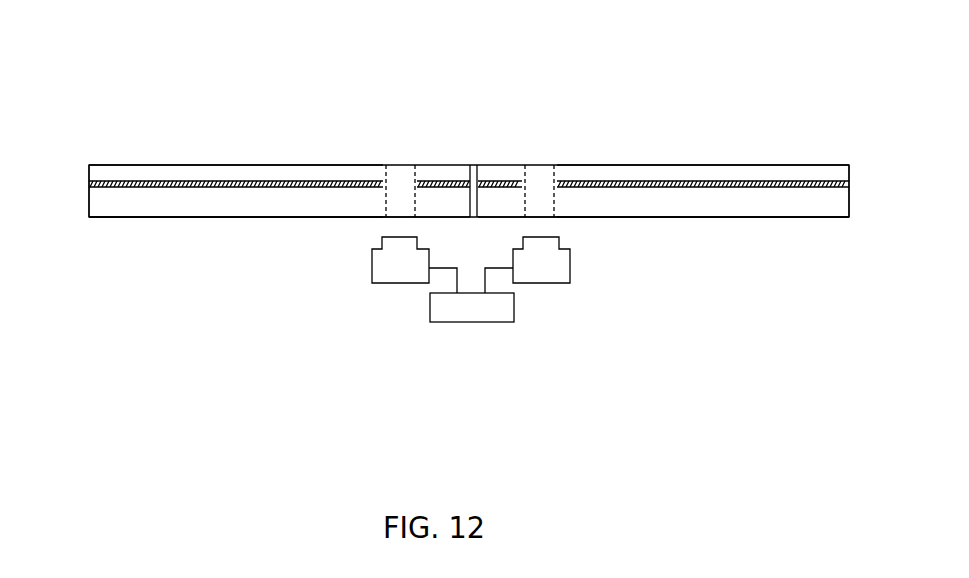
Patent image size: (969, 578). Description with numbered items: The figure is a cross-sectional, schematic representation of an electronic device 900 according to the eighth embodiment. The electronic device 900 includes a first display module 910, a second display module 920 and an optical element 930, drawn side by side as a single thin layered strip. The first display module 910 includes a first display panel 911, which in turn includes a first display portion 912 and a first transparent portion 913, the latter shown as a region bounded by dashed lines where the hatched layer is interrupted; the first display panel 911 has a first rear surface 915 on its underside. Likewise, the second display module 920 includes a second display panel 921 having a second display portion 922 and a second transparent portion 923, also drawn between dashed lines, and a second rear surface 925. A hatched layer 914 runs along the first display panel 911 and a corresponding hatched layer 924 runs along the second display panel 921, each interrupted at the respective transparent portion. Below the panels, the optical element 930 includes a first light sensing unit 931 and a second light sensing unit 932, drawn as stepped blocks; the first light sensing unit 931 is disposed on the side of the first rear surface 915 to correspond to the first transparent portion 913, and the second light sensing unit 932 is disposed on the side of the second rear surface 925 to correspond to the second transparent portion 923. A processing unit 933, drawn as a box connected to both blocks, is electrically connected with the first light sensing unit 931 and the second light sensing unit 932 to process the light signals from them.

The electronic device 900 is at (487, 24).
The first display module 910 is at (100, 172).
The first display panel 911 is at (90, 214).
The first display portion 912 is at (143, 203).
The first transparent portion 913 is at (401, 197).
The adhesive layer 914 is at (252, 185).
The first rear surface 915 is at (278, 218).
The second display module 920 is at (830, 172).
The second display panel 921 is at (848, 215).
The second display portion 922 is at (677, 197).
The second transparent portion 923 is at (538, 198).
The adhesive layer right portion 924 is at (630, 182).
The second rear surface 925 is at (755, 218).
The optical element 930 is at (573, 380).
The first light sensing unit 931 is at (397, 274).
The second light sensing unit 932 is at (555, 270).
The processing unit 933 is at (476, 312).